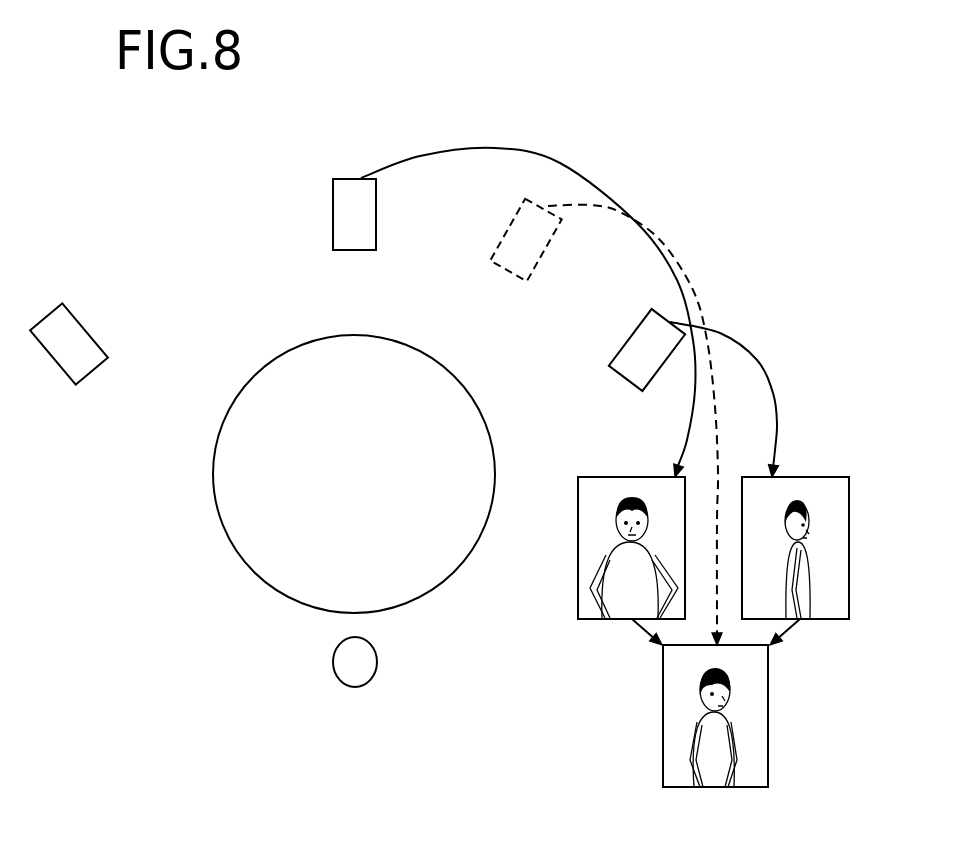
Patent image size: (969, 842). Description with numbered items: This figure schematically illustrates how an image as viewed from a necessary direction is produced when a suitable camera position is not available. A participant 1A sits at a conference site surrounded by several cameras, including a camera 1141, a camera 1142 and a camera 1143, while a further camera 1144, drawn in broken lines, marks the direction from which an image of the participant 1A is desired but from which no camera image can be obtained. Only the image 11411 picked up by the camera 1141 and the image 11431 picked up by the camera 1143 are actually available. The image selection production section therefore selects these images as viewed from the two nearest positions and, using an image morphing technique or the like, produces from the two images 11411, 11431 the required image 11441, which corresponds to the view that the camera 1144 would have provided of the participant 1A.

The camera 1141 is at (333, 225).
The camera 1142 is at (90, 334).
The camera 1143 is at (627, 338).
The camera 1144 is at (496, 242).
The participant 1A is at (355, 681).
The image 11411 is at (578, 582).
The image 11431 is at (816, 477).
The image 11441 is at (662, 713).